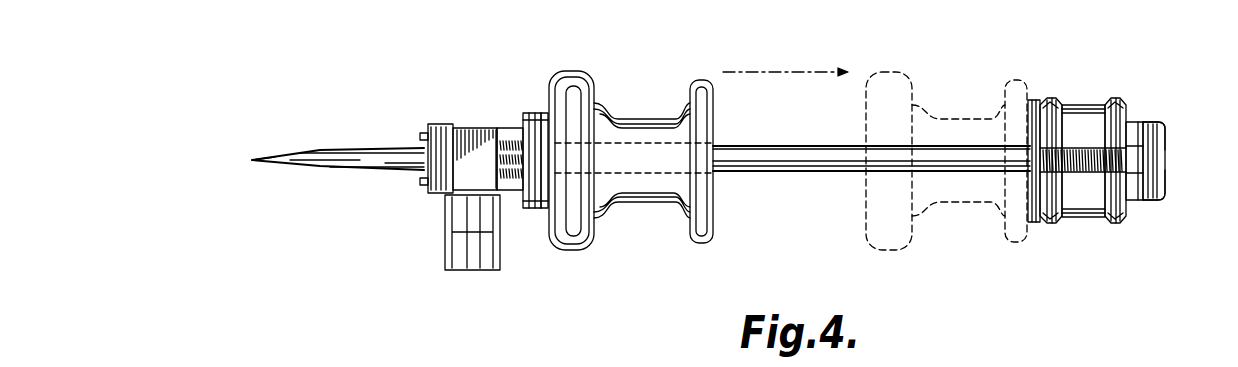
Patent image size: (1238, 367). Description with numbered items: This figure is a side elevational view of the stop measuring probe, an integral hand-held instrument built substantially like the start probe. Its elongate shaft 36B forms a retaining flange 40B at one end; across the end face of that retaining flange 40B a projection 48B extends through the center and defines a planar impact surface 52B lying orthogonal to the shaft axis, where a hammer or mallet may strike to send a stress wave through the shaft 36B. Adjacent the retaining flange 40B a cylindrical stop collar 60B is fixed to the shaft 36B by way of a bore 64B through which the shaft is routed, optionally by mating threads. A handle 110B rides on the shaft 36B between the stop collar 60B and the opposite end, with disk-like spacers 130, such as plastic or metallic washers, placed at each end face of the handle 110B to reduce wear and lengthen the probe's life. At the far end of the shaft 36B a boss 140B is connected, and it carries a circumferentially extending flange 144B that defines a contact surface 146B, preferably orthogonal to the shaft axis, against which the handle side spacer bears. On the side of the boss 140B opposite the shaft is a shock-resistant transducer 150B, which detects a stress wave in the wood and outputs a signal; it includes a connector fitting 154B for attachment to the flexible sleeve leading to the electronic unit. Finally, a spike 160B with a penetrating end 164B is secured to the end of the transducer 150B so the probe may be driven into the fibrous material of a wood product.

The penetrating end 164B is at (252, 160).
The spike 160B is at (307, 150).
The transducer 150B is at (470, 128).
The boss 140B is at (507, 128).
The flange 144B is at (525, 127).
The contact surface 146B is at (540, 210).
The spacers 130 is at (543, 112).
The handle 110B is at (655, 119).
The shaft 36B is at (793, 146).
The stop collar 60B is at (1085, 108).
The bore 64B is at (1085, 178).
The retaining flange 40B is at (1137, 122).
The impact surface 52B is at (1167, 145).
The projection 48B is at (1152, 183).
The connector fitting 154B is at (445, 245).